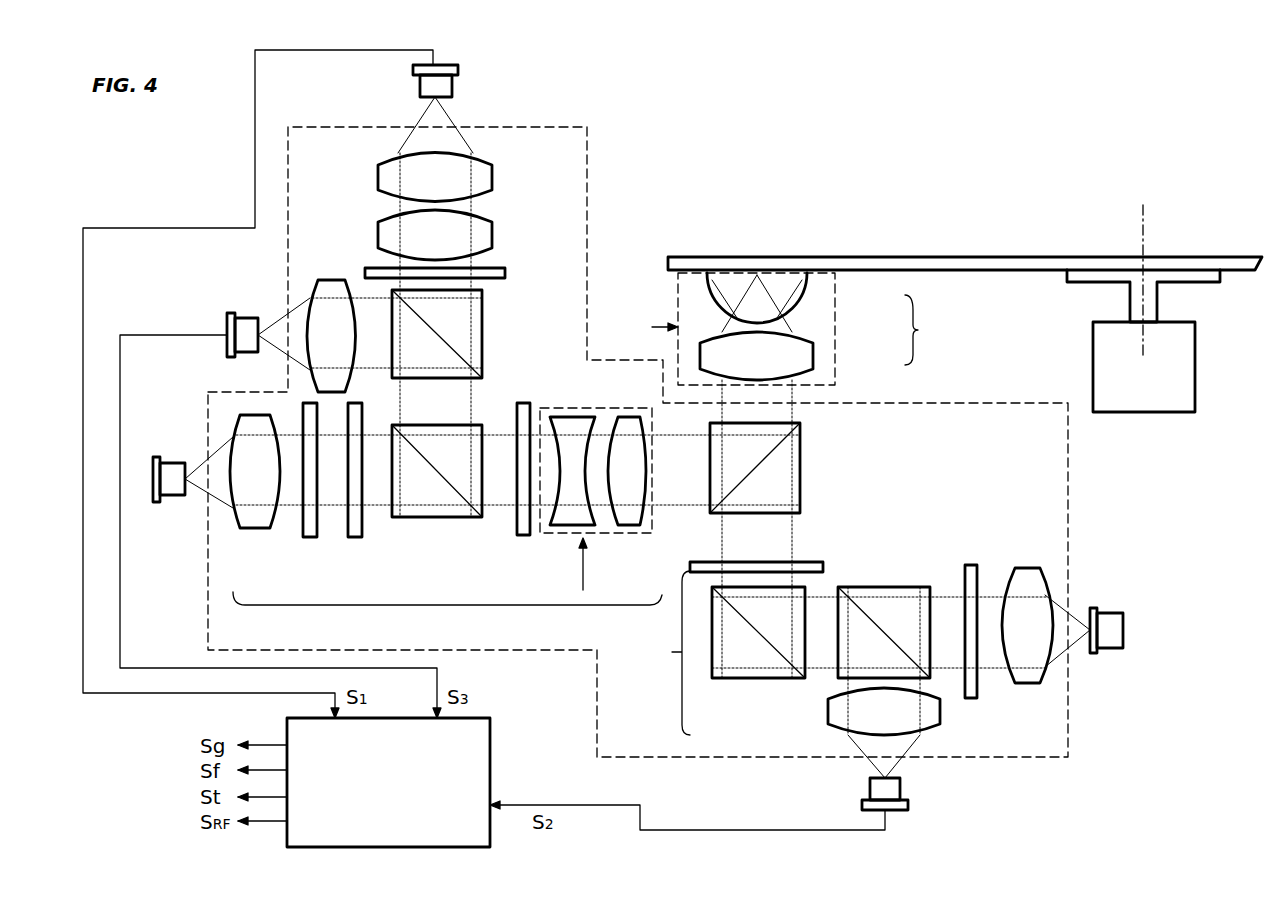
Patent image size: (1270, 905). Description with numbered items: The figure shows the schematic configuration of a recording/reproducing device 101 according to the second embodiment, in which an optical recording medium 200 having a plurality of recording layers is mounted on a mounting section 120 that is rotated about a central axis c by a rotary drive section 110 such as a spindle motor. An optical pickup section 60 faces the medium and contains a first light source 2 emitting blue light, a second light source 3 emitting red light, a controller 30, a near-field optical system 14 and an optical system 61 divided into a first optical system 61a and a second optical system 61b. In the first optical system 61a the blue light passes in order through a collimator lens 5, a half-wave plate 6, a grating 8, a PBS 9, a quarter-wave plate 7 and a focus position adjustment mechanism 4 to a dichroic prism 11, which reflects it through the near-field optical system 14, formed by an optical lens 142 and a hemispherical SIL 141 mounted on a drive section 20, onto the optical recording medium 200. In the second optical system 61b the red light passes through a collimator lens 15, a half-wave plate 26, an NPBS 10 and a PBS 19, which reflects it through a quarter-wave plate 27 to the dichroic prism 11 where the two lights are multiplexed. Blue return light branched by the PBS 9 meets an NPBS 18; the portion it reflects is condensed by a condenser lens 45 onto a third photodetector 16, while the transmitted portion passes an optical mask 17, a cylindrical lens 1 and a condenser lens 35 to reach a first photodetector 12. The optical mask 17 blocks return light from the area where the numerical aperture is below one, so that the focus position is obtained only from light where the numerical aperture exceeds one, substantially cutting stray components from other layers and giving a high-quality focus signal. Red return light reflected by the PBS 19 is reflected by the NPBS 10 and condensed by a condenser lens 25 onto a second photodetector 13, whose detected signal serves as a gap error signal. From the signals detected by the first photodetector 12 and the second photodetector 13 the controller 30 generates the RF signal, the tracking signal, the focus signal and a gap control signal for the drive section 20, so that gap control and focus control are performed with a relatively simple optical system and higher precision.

The recording/reproducing device 101 is at (979, 137).
The cylindrical lens 1 is at (492, 232).
The first light source 2 is at (172, 500).
The second light source 3 is at (1103, 608).
The focus position adjustment mechanism 4 is at (578, 408).
The collimator lens 5 is at (258, 528).
The half-wave plate 6 is at (310, 537).
The quarter-wave plate 7 is at (523, 537).
The grating 8 is at (355, 537).
The PBS 9 is at (437, 520).
The NPBS 10 is at (895, 587).
The dichroic prism 11 is at (800, 460).
The first photodetector 12 is at (455, 88).
The second photodetector 13 is at (900, 785).
The near-field optical system 14 is at (927, 330).
The collimator lens 15 is at (1028, 568).
The third photodetector 16 is at (242, 313).
The optical mask 17 is at (505, 273).
The NPBS 18 is at (482, 318).
The PBS 19 is at (735, 680).
The drive section 20 is at (678, 300).
The condenser lens 25 is at (828, 715).
The half-wave plate 26 is at (971, 565).
The quarter-wave plate 27 is at (812, 562).
The controller 30 is at (490, 740).
The condenser lens 35 is at (492, 178).
The condenser lens 45 is at (330, 280).
The optical pickup section 60 is at (1018, 802).
The optical system 61 is at (690, 758).
The first optical system 61a is at (447, 618).
The second optical system 61b is at (659, 653).
The rotary drive section 110 is at (1150, 412).
The mounting section 120 is at (1205, 283).
The SIL 141 is at (812, 290).
The optical lens 142 is at (813, 352).
The optical recording medium 200 is at (830, 258).
The central axis c is at (1146, 218).